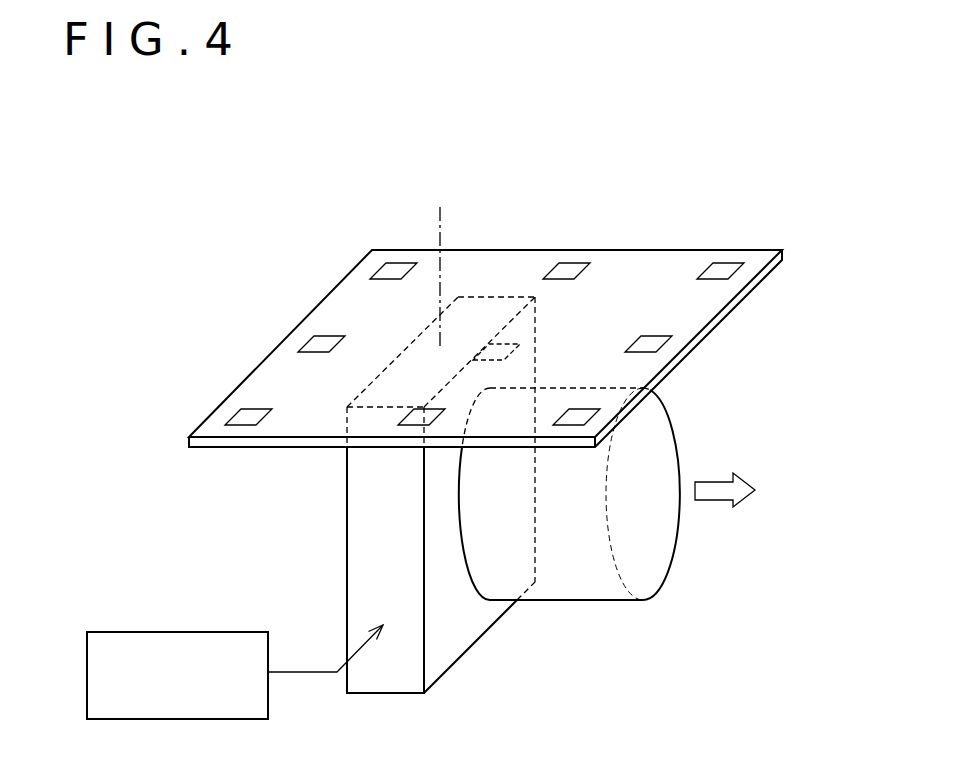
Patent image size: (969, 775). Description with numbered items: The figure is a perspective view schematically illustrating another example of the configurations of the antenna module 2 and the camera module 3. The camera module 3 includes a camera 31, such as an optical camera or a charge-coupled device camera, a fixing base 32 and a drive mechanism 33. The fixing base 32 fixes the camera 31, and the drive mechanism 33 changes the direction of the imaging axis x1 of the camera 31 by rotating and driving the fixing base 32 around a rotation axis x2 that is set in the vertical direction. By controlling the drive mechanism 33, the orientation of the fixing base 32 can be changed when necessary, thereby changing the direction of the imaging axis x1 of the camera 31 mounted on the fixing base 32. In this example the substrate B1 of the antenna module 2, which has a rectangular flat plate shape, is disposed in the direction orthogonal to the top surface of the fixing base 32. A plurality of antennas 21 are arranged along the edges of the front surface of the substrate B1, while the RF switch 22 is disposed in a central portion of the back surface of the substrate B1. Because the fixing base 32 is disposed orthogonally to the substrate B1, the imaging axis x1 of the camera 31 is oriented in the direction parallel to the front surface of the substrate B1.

The antenna module 2 is at (512, 334).
The antennas 21 is at (383, 270).
The RF switch 22 is at (493, 345).
The substrate B1 is at (748, 250).
The rotation axis x2 is at (441, 262).
The imaging axis x1 is at (720, 490).
The camera module 3 is at (407, 508).
The camera 31 is at (658, 567).
The fixing base 32 is at (358, 533).
The drive mechanism 33 is at (190, 632).